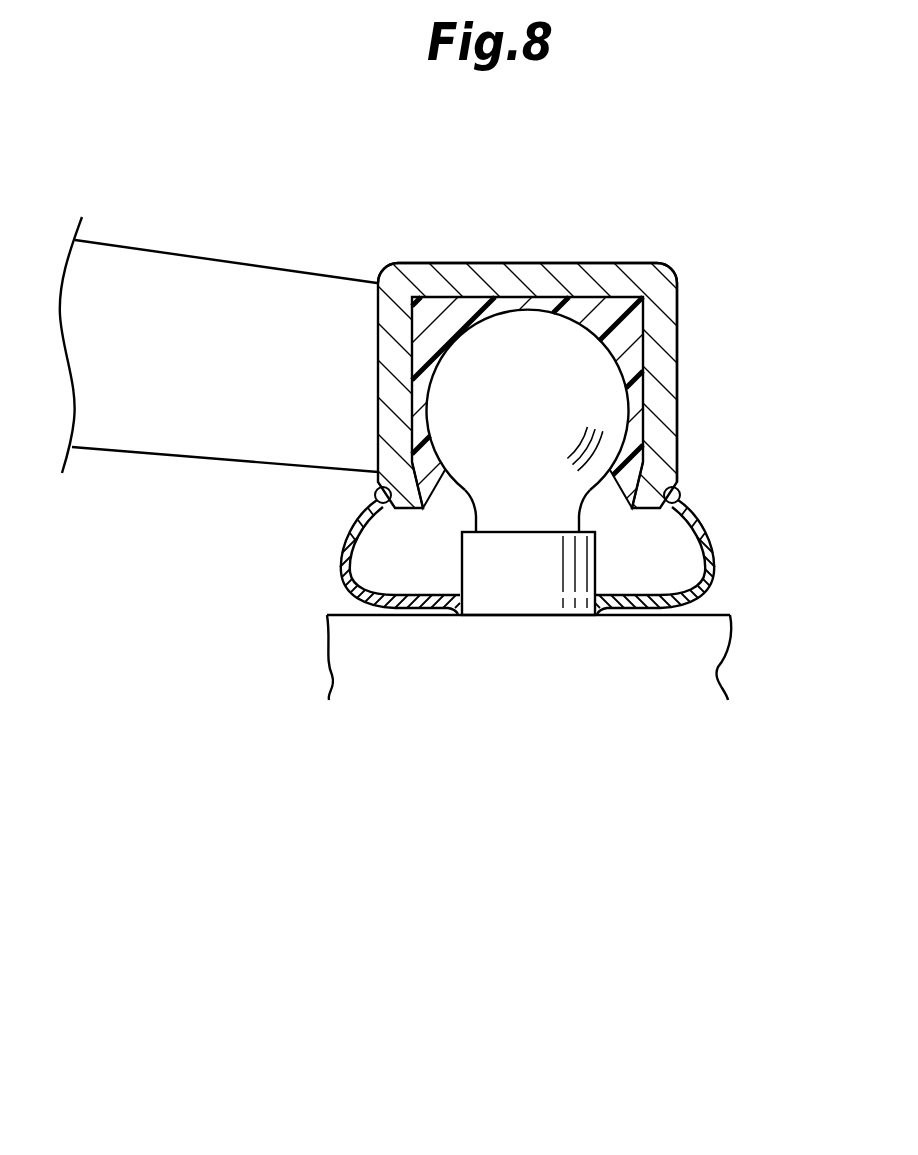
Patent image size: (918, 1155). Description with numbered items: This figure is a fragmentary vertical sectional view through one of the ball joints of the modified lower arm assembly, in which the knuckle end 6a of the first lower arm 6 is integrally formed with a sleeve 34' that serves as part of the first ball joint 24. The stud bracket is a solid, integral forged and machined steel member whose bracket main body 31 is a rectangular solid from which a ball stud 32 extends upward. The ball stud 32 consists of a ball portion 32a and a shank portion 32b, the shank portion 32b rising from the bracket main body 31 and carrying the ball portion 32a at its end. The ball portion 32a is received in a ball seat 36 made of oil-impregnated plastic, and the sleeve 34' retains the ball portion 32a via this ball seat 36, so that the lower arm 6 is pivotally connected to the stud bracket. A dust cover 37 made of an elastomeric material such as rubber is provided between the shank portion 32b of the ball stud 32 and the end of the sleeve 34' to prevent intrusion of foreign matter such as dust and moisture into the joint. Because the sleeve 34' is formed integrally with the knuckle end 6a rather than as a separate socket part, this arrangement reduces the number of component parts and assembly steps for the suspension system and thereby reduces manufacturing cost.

The first lower arm 6 is at (220, 270).
The knuckle end 6a is at (512, 272).
The first ball joint 24 is at (696, 229).
The sleeve 34' is at (581, 385).
The ball seat 36 is at (446, 302).
The ball stud 32 is at (606, 515).
The ball portion 32a is at (607, 372).
The shank portion 32b is at (525, 595).
The dust cover 37 is at (355, 517).
The bracket main body 31 is at (343, 617).